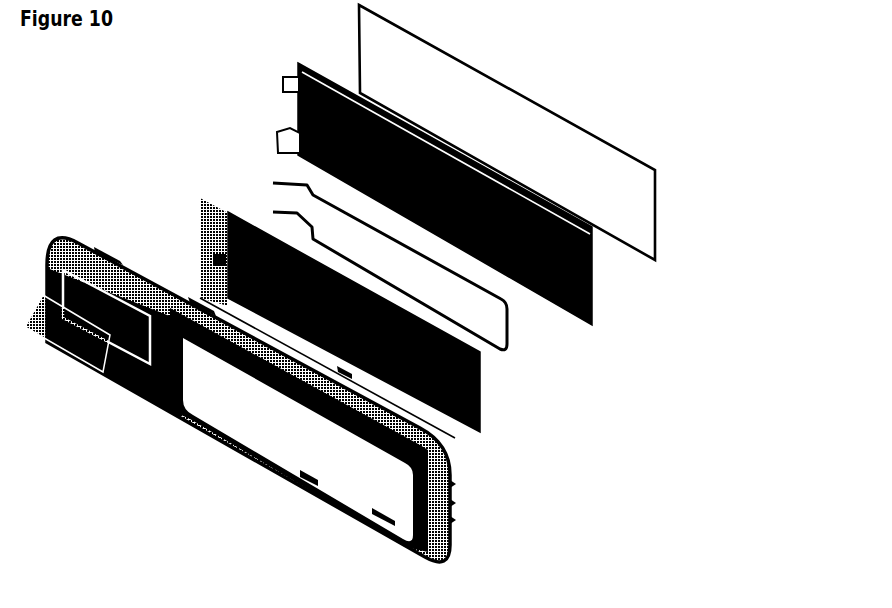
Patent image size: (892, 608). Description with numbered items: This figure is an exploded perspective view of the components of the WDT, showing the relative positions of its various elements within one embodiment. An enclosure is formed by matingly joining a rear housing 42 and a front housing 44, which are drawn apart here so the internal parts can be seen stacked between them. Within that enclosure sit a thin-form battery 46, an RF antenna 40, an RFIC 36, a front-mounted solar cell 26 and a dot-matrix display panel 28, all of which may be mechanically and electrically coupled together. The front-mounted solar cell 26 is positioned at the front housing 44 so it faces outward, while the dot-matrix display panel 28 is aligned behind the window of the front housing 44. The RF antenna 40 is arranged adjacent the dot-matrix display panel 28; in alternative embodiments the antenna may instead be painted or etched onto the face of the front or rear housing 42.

The front-mounted solar cell 26 is at (40, 297).
The dot-matrix display panel 28 is at (488, 398).
The RFIC 36 is at (215, 253).
The RF antenna 40 is at (512, 334).
The rear housing 42 is at (655, 213).
The front housing 44 is at (443, 533).
The thin-form battery 46 is at (313, 108).